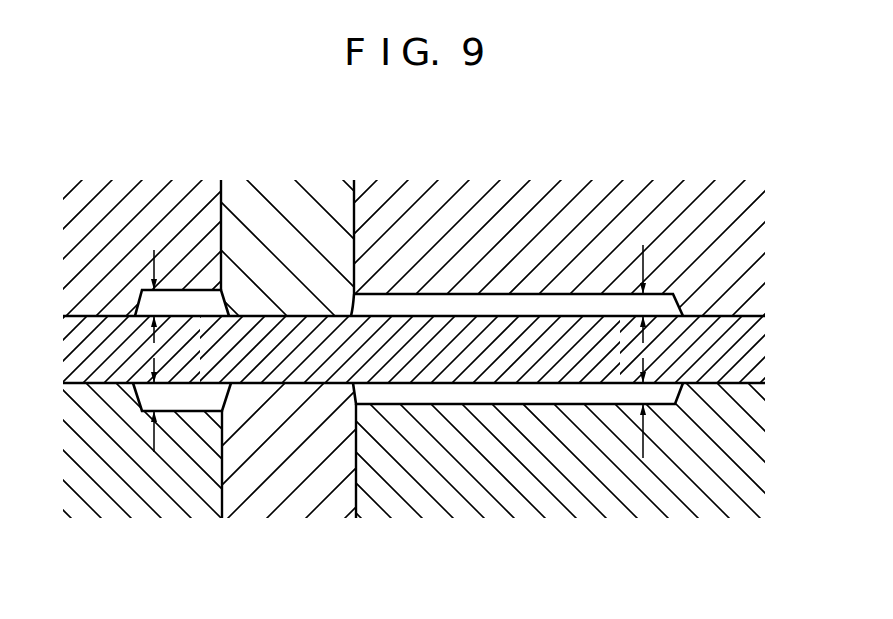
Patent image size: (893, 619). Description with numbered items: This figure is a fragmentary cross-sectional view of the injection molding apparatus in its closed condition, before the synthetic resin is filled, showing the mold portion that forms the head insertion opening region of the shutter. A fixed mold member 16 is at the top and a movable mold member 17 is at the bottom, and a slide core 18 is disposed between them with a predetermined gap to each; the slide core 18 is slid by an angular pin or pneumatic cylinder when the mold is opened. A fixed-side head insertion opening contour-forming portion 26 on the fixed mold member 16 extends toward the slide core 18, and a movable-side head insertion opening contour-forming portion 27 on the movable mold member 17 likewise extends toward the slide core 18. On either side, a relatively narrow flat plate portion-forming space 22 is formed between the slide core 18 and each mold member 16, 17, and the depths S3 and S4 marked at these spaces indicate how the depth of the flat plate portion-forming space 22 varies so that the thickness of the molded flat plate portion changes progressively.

The fixed mold member 16 is at (503, 212).
The movable mold member 17 is at (477, 492).
The slide core 18 is at (538, 340).
The flat plate portion-forming space 22 is at (438, 307).
The fixed-side head insertion opening contour-forming portion 26 is at (290, 205).
The movable-side head insertion opening contour-forming portion 27 is at (293, 482).
The recess depth S3 is at (645, 300).
The recess depth S4 is at (150, 301).